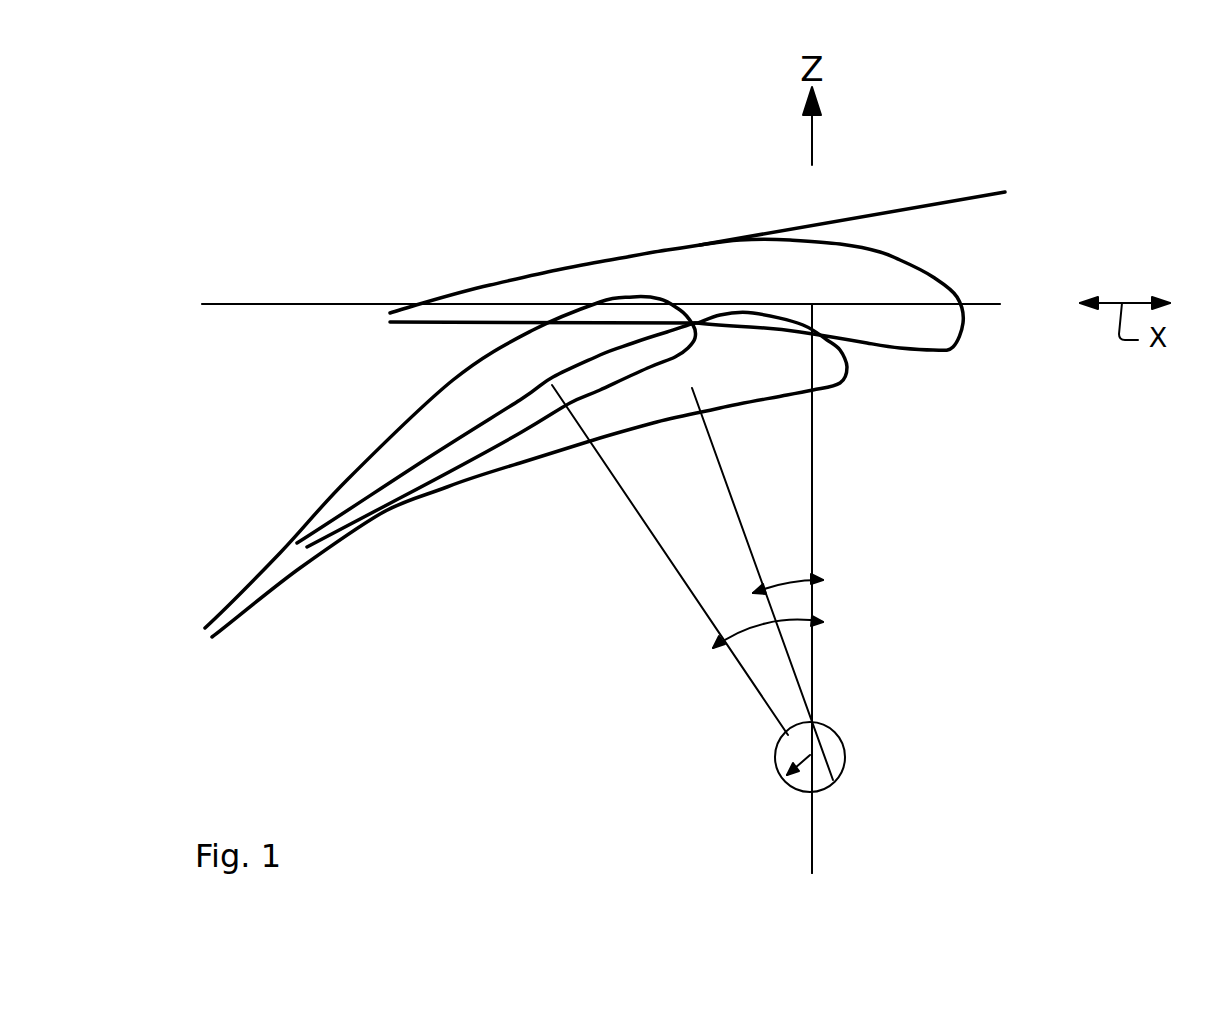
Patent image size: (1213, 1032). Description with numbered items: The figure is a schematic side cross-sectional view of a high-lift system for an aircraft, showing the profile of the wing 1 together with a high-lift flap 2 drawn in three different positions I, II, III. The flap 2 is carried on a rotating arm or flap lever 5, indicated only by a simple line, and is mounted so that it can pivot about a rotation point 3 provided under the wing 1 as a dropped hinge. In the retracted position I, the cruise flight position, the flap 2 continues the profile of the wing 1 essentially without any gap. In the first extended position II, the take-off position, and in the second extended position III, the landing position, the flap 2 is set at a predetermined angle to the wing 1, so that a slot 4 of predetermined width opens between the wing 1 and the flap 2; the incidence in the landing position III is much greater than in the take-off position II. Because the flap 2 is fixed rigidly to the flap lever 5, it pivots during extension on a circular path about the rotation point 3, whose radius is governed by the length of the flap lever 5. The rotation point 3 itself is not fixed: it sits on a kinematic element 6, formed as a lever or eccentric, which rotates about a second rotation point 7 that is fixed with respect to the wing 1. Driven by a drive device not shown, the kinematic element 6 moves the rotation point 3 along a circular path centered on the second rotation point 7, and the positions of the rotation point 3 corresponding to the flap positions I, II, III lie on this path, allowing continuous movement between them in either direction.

The wing 1 is at (905, 235).
The high-lift flap 2 is at (452, 399).
The rotation point 3 is at (790, 773).
The slot 4 is at (893, 368).
The flap lever 5 is at (812, 490).
The kinematic element 6 is at (790, 773).
The second rotation point 7 is at (808, 854).
The retracted position I is at (817, 708).
The first extended position II is at (842, 788).
The second extended position III is at (775, 725).